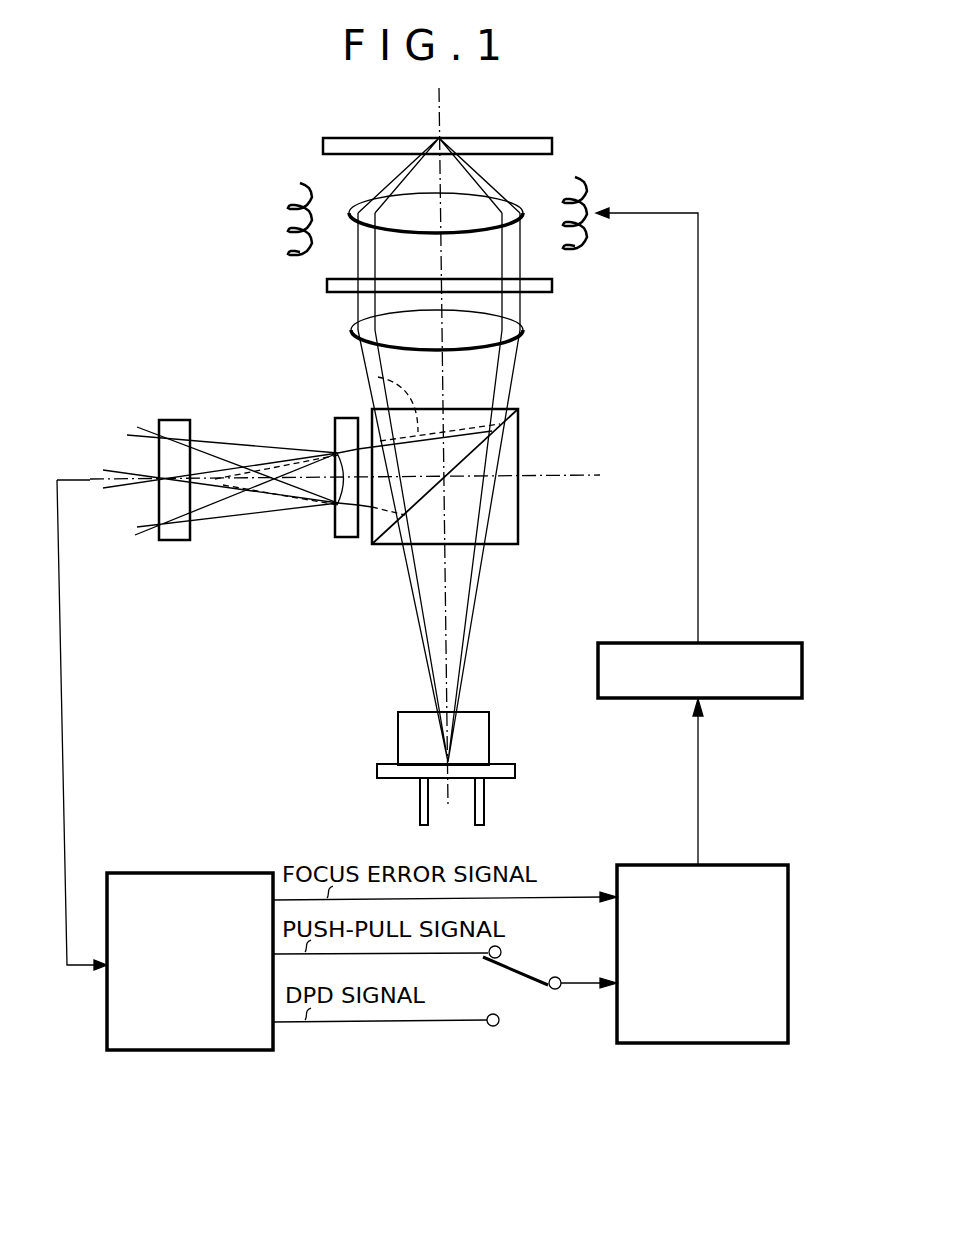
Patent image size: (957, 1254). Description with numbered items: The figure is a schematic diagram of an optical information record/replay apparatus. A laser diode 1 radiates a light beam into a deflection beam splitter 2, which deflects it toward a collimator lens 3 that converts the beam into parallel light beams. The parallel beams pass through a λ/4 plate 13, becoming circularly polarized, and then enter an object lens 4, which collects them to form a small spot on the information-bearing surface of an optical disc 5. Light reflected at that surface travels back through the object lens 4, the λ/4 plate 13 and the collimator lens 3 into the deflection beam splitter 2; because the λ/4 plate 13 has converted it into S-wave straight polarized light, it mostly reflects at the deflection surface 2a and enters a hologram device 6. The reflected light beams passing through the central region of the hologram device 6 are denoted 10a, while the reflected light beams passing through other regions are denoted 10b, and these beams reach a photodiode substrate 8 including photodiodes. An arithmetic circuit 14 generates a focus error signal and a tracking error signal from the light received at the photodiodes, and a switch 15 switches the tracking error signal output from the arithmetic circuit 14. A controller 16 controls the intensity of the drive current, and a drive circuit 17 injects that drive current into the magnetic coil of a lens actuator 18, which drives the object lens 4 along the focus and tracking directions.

The laser diode 1 is at (490, 736).
The deflection beam splitter 2 is at (519, 520).
The deflection surface 2a is at (474, 452).
The collimator lens 3 is at (524, 333).
The object lens 4 is at (372, 207).
The optical disc 5 is at (521, 138).
The hologram device 6 is at (343, 430).
The photodiode substrate 8 is at (183, 427).
The reflected light beams passing through the central region of the hologram device 10a is at (372, 378).
The reflected light beams passing through other regions than the central region 10b is at (383, 515).
The λ/4 plate 13 is at (552, 283).
The arithmetic circuit 14 is at (190, 1052).
The switch 15 is at (515, 986).
The controller 16 is at (712, 1045).
The drive circuit 17 is at (759, 641).
The lens actuator 18 is at (585, 194).